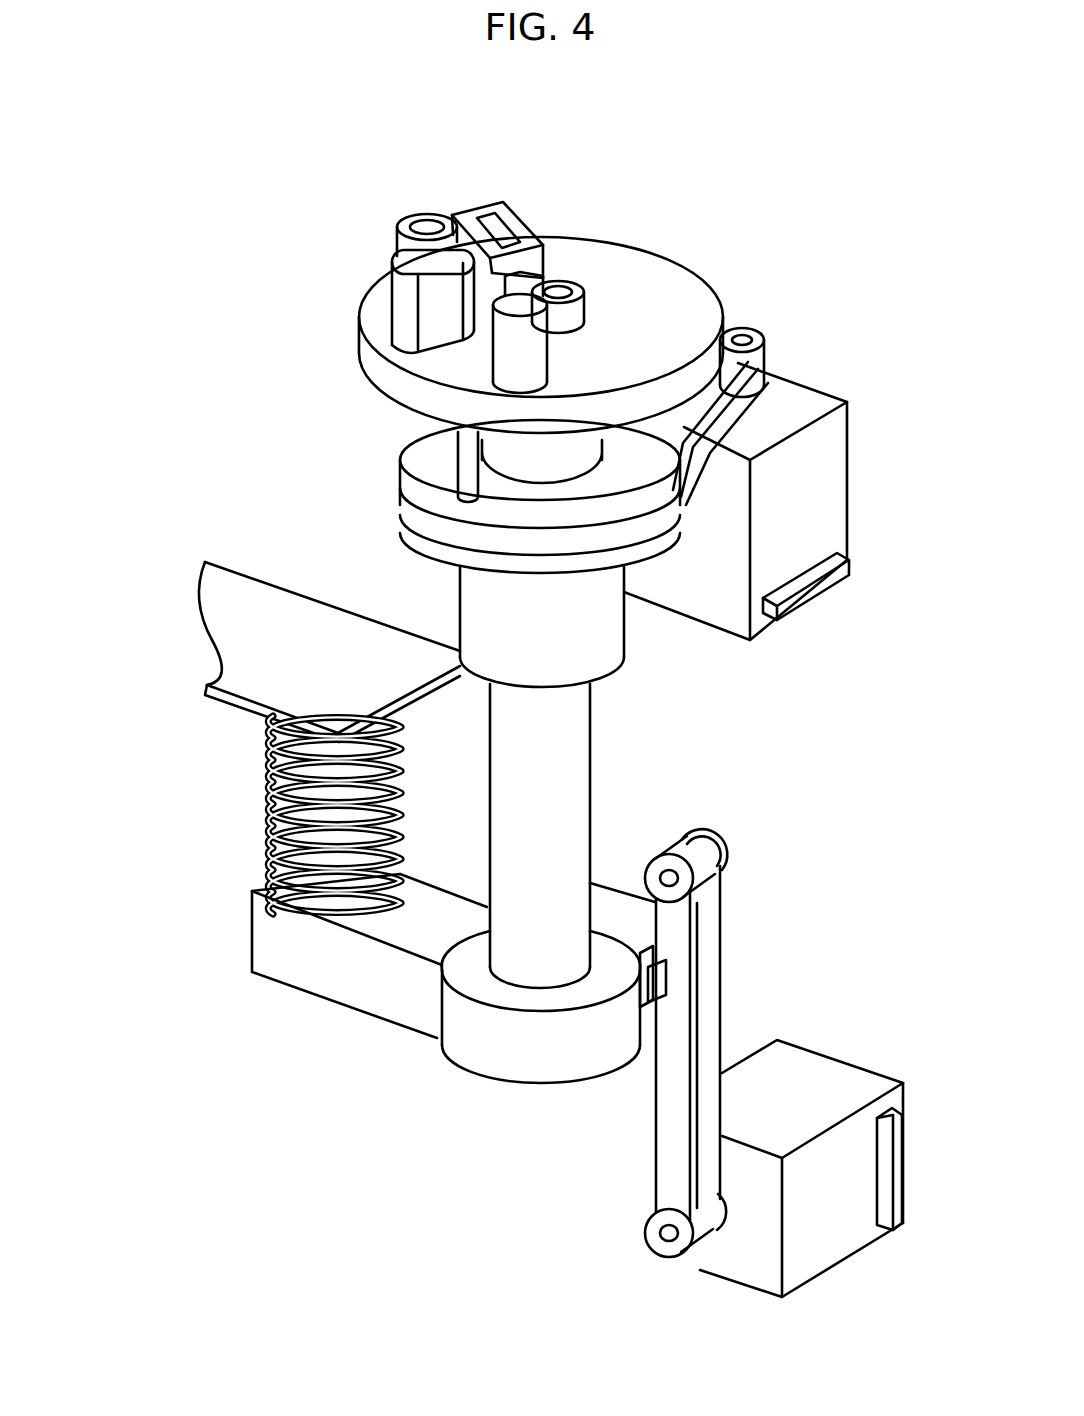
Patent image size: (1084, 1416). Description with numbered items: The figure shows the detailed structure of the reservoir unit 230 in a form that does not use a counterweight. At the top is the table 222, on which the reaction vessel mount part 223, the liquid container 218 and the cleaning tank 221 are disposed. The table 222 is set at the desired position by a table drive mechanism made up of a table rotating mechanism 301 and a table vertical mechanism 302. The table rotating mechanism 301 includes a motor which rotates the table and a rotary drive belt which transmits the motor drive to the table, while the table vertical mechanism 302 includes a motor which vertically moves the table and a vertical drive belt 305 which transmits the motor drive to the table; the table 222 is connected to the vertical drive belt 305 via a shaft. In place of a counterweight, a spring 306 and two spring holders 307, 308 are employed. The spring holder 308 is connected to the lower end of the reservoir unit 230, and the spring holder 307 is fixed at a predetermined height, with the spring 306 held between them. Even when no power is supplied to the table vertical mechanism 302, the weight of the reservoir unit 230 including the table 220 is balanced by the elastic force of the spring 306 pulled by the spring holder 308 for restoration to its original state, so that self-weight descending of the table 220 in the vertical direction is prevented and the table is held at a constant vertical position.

The reservoir unit 230 is at (870, 57).
The table 222 is at (666, 326).
The table 220 is at (591, 273).
The liquid container 218 is at (364, 273).
The reaction vessel mount part 223 is at (373, 182).
The cleaning tank 221 is at (516, 193).
The table rotating mechanism 301 is at (672, 622).
The spring holder 307 is at (340, 661).
The spring 306 is at (233, 825).
The spring holder 308 is at (383, 986).
The vertical drive belt 305 is at (598, 1043).
The table vertical mechanism 302 is at (681, 1183).